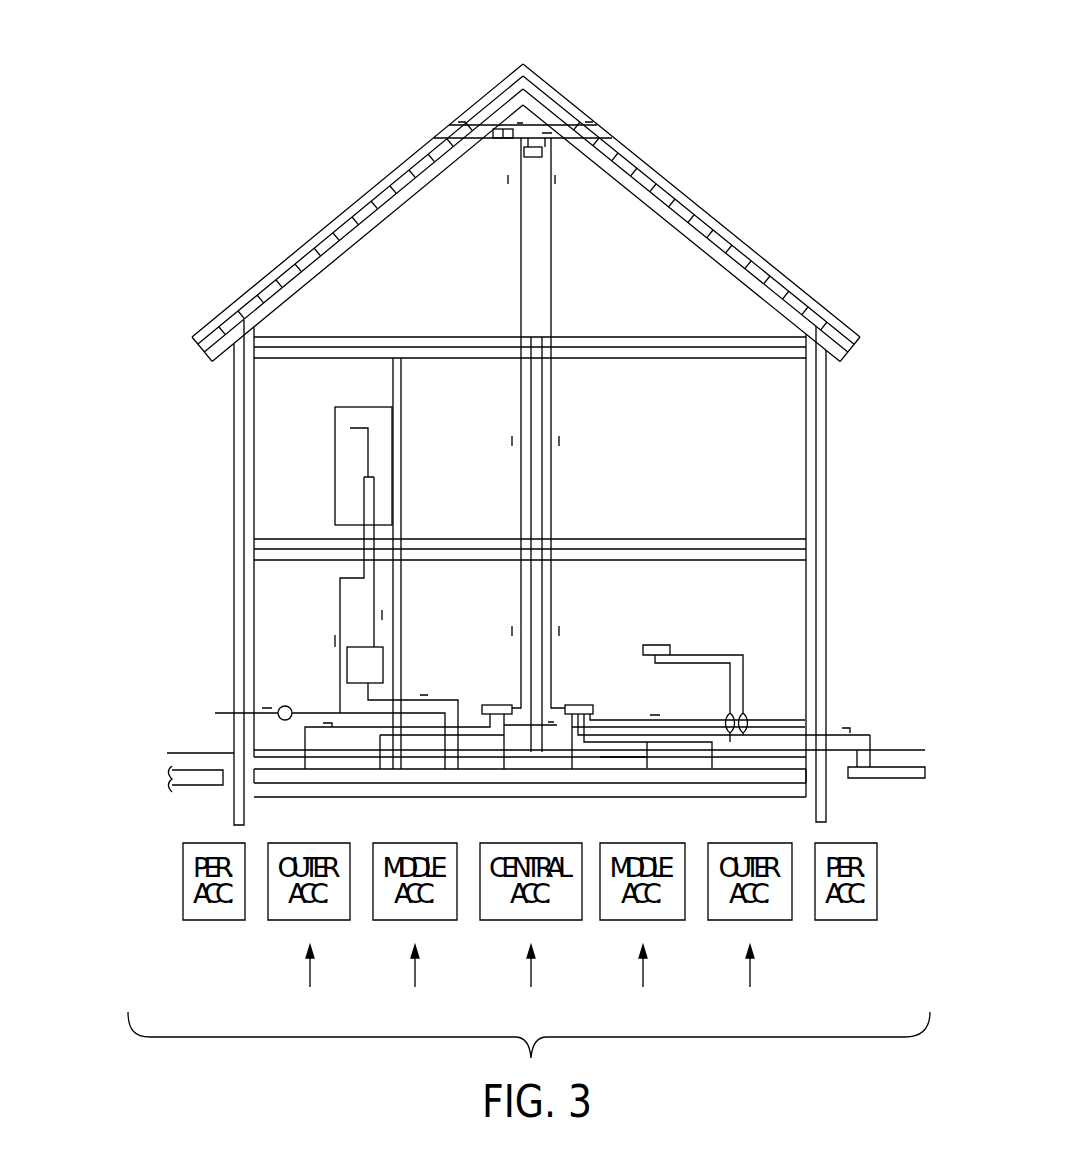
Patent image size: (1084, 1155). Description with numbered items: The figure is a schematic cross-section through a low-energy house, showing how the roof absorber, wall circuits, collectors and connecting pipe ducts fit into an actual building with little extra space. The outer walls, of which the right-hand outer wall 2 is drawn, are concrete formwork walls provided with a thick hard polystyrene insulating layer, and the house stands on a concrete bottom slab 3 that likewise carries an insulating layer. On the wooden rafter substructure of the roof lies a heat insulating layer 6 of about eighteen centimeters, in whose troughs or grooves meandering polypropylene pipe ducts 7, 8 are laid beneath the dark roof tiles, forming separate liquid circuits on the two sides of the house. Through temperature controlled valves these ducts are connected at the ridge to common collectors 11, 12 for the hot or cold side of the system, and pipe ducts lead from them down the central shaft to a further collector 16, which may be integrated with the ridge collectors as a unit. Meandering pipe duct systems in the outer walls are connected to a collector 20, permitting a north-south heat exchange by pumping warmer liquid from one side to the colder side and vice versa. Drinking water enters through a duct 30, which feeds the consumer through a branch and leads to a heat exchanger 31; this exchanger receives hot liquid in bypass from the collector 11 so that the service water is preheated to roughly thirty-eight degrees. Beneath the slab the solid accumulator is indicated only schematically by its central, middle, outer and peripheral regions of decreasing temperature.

The outer wall 2 is at (824, 440).
The bottom slab 3 is at (232, 441).
The heat insulating layer 6 is at (410, 181).
The pipe duct 7 is at (347, 208).
The pipe duct 8 is at (630, 148).
The collector 11 is at (503, 140).
The collector 12 is at (540, 158).
The collector 16 is at (584, 704).
The collector 20 is at (495, 704).
The duct 30 is at (242, 712).
The heat exchanger 31 is at (386, 667).